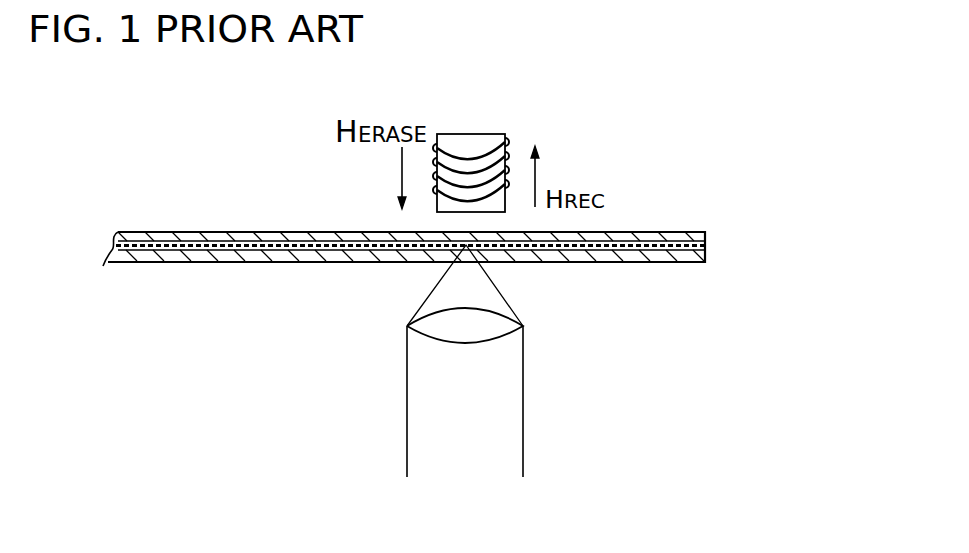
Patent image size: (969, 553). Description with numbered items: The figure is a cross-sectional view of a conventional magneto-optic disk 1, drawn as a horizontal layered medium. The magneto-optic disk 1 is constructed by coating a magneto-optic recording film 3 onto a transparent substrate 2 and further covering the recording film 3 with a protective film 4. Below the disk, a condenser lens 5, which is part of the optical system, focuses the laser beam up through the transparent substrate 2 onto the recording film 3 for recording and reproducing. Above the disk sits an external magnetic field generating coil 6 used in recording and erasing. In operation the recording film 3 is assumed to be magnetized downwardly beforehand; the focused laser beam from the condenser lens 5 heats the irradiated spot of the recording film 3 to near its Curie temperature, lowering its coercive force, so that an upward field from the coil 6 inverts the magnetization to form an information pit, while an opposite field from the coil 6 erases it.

The magneto-optic disk 1 is at (137, 223).
The transparent substrate 2 is at (189, 262).
The magneto-optic recording film 3 is at (285, 244).
The protective film 4 is at (216, 232).
The condenser lens 5 is at (523, 327).
The external magnetic field generating coil 6 is at (505, 134).